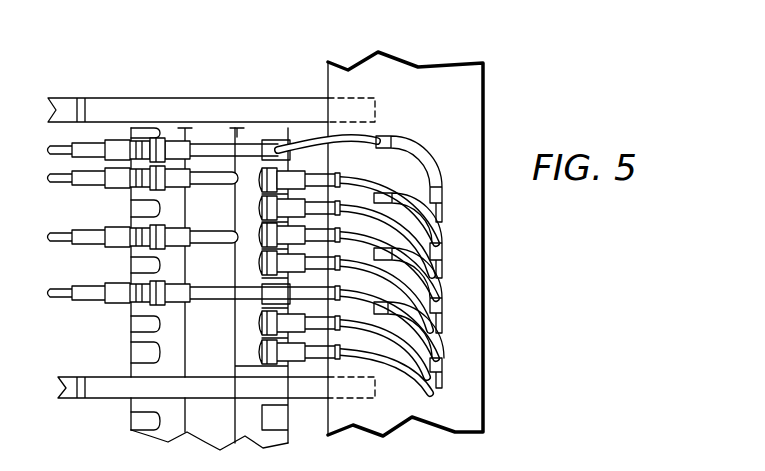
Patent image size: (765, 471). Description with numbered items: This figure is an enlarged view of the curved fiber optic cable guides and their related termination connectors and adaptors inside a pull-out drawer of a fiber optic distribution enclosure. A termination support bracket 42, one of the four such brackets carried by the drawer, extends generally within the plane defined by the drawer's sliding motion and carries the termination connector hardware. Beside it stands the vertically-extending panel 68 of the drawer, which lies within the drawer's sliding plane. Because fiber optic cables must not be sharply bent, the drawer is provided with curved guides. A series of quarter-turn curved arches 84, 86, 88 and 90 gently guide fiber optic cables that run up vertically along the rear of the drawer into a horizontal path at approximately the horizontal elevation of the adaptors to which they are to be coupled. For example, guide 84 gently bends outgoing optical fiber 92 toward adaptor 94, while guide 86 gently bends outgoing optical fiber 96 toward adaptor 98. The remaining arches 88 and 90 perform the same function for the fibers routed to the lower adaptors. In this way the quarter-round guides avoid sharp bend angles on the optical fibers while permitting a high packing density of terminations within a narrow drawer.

The termination support bracket 42 is at (128, 110).
The vertically-extending panel 68 is at (470, 96).
The quarter-turn curved arch 84 is at (404, 163).
The quarter-turn curved arch 86 is at (420, 250).
The quarter-turn curved arch 88 is at (430, 310).
The quarter-turn curved arch 90 is at (443, 362).
The outgoing optical fiber 92 is at (355, 145).
The adaptor 94 is at (158, 140).
The outgoing optical fiber 96 is at (382, 183).
The adaptor 98 is at (270, 173).